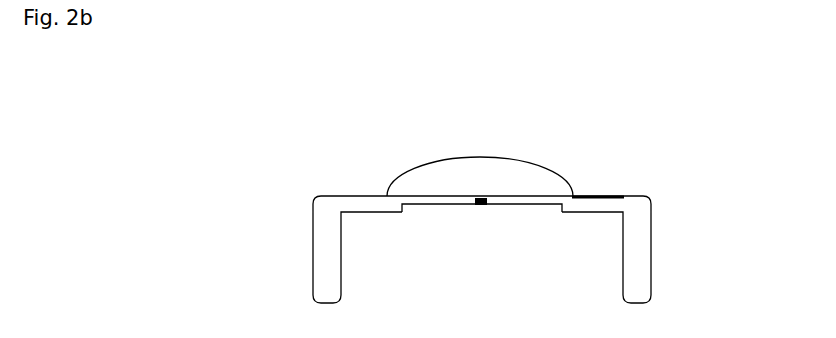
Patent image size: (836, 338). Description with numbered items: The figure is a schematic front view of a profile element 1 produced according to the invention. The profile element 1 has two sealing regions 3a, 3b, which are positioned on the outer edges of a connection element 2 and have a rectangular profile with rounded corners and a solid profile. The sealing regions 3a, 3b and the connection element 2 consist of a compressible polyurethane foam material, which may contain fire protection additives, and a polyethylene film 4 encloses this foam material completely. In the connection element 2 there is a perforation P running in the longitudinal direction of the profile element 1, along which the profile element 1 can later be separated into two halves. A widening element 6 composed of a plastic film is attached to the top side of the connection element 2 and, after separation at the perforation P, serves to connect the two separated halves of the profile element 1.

The profile element 1 is at (380, 160).
The connection element 2 is at (535, 196).
The sealing region 3a is at (323, 250).
The sealing region 3b is at (643, 250).
The polyethylene film 4 is at (623, 196).
The widening element 6 is at (469, 157).
The perforation P is at (479, 204).